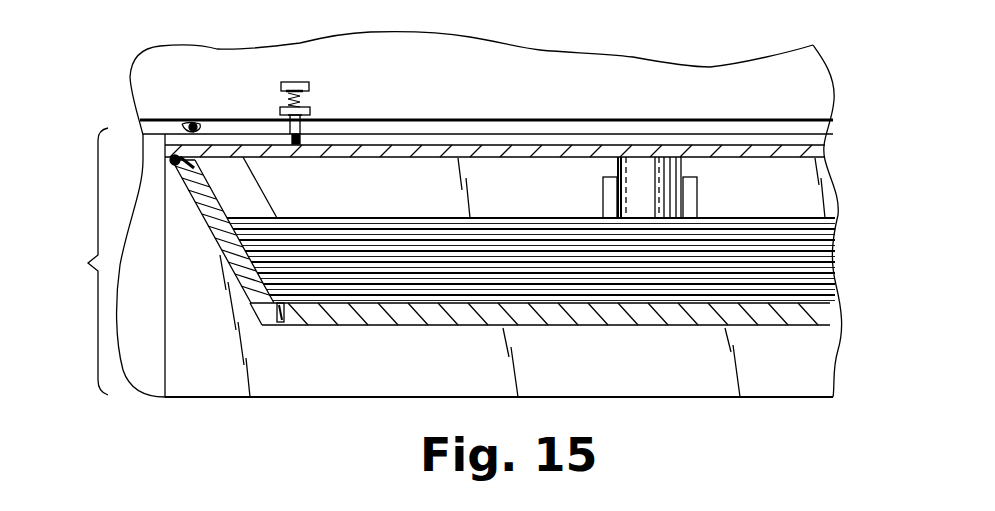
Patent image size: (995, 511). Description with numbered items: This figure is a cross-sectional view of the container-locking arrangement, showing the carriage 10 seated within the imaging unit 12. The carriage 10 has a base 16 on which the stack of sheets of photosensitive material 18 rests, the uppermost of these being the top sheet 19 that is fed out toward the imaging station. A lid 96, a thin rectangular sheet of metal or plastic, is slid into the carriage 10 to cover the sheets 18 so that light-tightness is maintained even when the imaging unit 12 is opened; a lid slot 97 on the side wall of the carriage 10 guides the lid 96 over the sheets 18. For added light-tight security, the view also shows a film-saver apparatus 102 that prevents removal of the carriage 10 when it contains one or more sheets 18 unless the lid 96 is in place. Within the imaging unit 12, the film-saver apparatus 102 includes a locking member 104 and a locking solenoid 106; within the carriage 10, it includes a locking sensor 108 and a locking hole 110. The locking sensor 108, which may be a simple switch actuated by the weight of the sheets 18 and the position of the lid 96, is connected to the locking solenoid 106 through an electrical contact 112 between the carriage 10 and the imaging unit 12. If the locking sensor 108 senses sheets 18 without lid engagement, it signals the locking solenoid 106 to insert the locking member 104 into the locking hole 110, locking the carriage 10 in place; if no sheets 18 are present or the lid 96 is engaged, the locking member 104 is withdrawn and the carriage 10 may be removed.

The carriage 10 is at (693, 397).
The imaging unit 12 is at (545, 50).
The base 16 is at (803, 303).
The sheets of photosensitive material 18 is at (550, 235).
The top sheet 19 is at (758, 217).
The lid 96 is at (630, 152).
The lid slot 97 is at (760, 152).
The film-saver apparatus 102 is at (156, 262).
The locking member 104 is at (308, 108).
The locking solenoid 106 is at (305, 83).
The locking sensor 108 is at (177, 178).
The locking hole 110 is at (298, 144).
The electrical contact 112 is at (188, 127).